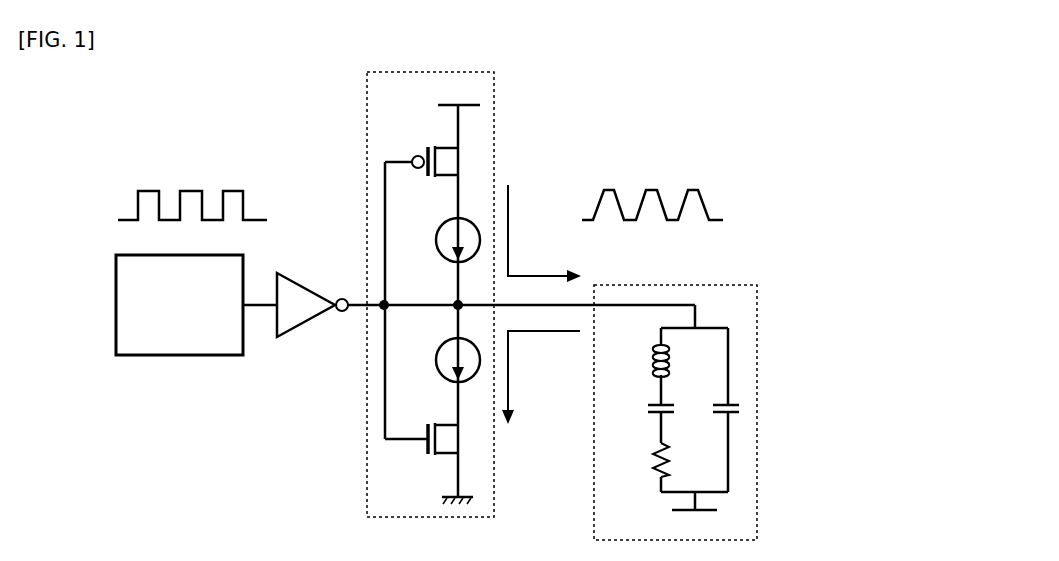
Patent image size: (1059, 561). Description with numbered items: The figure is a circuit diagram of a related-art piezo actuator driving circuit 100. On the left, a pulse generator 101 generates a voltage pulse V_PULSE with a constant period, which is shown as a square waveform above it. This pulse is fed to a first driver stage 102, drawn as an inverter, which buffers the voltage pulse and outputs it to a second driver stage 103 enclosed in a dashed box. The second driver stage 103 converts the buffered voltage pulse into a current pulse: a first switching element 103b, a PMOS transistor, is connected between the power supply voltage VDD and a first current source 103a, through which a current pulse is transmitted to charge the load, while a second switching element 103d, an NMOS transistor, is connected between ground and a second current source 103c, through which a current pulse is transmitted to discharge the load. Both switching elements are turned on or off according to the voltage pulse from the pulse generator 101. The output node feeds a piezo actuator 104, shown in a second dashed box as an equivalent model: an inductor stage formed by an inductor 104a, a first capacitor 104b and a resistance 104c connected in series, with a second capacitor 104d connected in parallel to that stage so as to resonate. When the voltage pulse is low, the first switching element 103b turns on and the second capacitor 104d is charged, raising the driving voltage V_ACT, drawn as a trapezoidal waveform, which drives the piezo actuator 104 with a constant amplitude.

The piezo actuator driving circuit 100 is at (706, 136).
The pulse generator 101 is at (180, 356).
The first driver stage 102 is at (300, 331).
The second driver stage 103 is at (476, 294).
The first current source 103a is at (440, 222).
The first switching element 103b is at (422, 148).
The second current source 103c is at (445, 343).
The second switching element 103d is at (430, 423).
The piezo actuator 104 is at (722, 412).
The inductor 104a is at (655, 355).
The first capacitor 104b is at (672, 416).
The resistance 104c is at (655, 470).
The second capacitor 104d is at (736, 416).